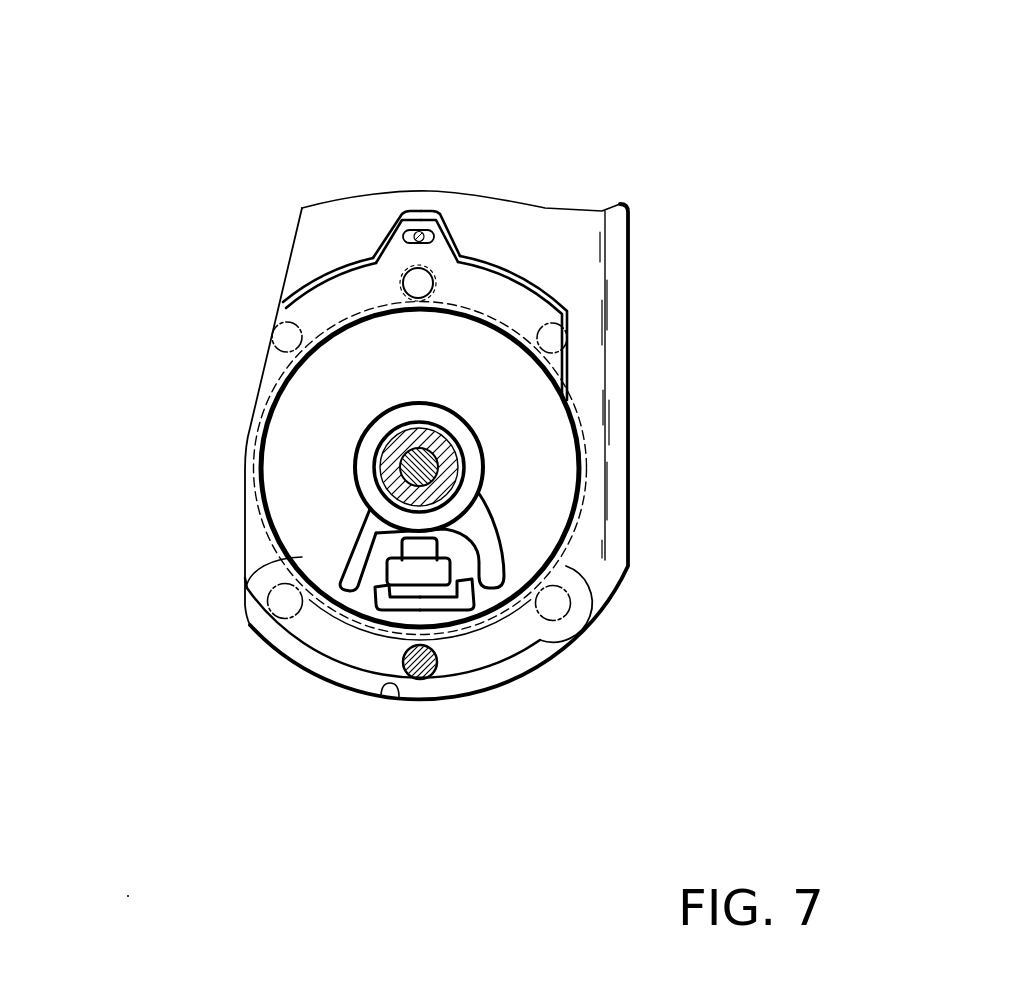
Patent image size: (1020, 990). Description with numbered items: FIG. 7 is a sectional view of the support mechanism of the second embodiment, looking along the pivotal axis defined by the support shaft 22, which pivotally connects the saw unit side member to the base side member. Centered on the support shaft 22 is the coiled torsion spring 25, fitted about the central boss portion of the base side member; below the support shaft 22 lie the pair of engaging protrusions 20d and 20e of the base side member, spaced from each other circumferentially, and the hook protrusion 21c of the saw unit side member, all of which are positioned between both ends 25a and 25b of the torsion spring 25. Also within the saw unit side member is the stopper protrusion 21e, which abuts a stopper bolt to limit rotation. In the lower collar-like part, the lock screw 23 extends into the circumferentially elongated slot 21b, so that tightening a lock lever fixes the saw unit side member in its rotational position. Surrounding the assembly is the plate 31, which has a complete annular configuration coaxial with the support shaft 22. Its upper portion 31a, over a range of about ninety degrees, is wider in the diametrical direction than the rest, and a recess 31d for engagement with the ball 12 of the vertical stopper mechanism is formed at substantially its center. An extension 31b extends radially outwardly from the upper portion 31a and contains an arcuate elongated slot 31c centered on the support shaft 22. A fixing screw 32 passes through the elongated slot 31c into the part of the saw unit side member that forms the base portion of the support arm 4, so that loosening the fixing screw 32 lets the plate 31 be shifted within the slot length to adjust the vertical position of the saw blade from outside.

The support arm 4 is at (513, 222).
The ball 12 is at (300, 338).
The engaging protrusion 20d is at (468, 596).
The engaging protrusion 20e is at (373, 597).
The slot 21b is at (397, 697).
The hook protrusion 21c is at (437, 573).
The stopper protrusion 21e is at (413, 547).
The support shaft 22 is at (422, 470).
The lock screw 23 is at (436, 668).
The coiled torsion spring 25 is at (468, 438).
The end of torsion spring 25a is at (494, 575).
The end of torsion spring 25b is at (348, 588).
The plate 31 is at (381, 207).
The upper portion 31a is at (510, 287).
The extension 31b is at (445, 250).
The elongated slot 31c is at (395, 256).
The recess 31d is at (333, 295).
The fixing screw 32 is at (417, 231).